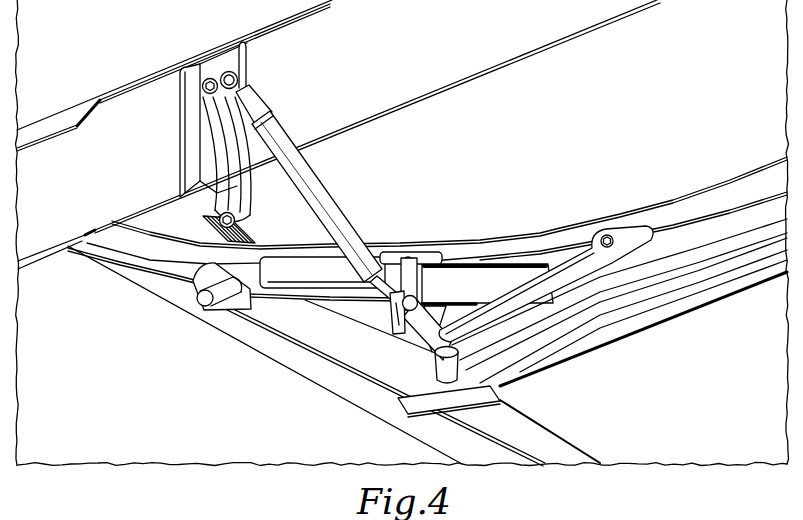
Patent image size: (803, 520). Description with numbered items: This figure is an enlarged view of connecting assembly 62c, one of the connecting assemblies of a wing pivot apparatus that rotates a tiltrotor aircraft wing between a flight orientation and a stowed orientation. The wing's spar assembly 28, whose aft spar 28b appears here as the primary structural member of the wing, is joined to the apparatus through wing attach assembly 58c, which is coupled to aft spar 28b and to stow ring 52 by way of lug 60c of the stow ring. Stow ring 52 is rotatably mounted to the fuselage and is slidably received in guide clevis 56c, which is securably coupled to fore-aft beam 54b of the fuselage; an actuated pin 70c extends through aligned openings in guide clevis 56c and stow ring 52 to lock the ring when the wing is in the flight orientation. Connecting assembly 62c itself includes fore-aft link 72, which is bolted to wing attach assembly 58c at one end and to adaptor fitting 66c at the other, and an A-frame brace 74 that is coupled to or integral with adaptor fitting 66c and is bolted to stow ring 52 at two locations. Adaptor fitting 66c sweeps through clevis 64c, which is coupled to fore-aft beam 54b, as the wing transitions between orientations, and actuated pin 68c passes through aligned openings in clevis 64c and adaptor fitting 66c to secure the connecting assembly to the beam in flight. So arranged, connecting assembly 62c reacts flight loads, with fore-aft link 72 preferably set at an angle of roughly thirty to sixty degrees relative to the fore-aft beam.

The spar assembly 28 is at (521, 58).
The aft spar 28b is at (442, 35).
The stow ring 52 is at (484, 247).
The fore-aft beam 54b is at (563, 453).
The guide clevis 56c is at (263, 300).
The wing attach assembly 58c is at (192, 123).
The lug 60c is at (255, 222).
The connecting assembly 62c is at (310, 163).
The clevis 64c is at (500, 396).
The adaptor fitting 66c is at (432, 348).
The actuated pin 68c is at (415, 430).
The actuated pin 70c is at (183, 285).
The fore-aft link 72 is at (350, 214).
The A-frame brace 74 is at (580, 258).